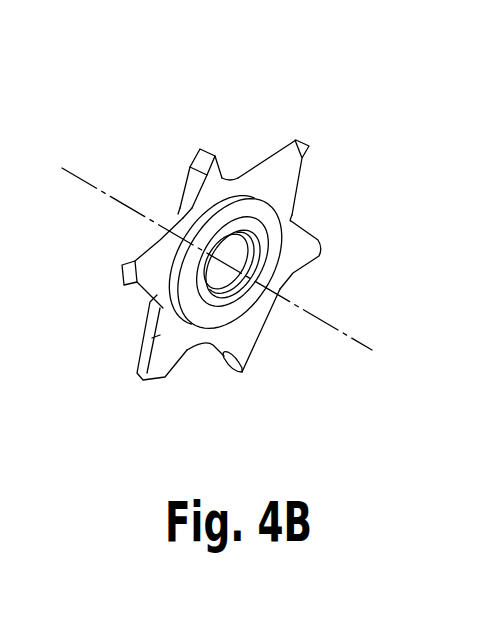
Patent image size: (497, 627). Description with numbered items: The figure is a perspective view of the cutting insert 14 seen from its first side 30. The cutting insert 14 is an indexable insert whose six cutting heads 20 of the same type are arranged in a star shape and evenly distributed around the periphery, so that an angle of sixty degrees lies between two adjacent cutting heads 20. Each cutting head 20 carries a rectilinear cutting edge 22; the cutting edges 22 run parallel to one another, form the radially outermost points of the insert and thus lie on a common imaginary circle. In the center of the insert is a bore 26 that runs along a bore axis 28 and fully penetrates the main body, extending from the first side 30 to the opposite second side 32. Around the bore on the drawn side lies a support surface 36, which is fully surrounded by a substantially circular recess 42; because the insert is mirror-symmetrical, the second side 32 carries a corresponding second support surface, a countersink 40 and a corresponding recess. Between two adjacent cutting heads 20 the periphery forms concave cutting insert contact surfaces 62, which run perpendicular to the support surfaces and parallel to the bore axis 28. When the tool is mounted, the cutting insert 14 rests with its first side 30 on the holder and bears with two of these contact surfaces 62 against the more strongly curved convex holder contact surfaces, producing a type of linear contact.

The cutting insert 14 is at (160, 86).
The cutting head 20 is at (148, 298).
The cutting edge 22 is at (122, 270).
The bore 26 is at (262, 322).
The bore axis 28 is at (78, 180).
The first side 30 is at (258, 371).
The second side 32 is at (136, 350).
The support surface 36 is at (266, 222).
The countersink 40 is at (266, 258).
The recess 42 is at (274, 190).
The cutting insert contact surface 62 is at (238, 176).